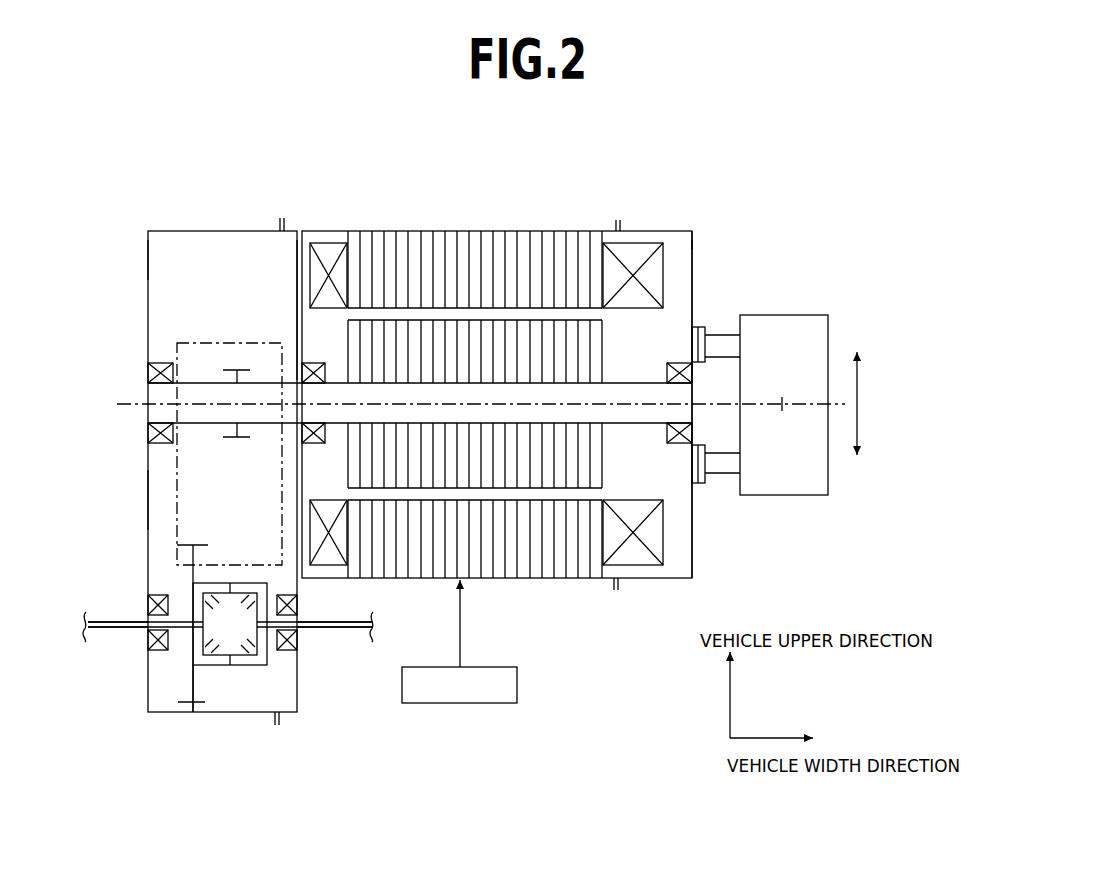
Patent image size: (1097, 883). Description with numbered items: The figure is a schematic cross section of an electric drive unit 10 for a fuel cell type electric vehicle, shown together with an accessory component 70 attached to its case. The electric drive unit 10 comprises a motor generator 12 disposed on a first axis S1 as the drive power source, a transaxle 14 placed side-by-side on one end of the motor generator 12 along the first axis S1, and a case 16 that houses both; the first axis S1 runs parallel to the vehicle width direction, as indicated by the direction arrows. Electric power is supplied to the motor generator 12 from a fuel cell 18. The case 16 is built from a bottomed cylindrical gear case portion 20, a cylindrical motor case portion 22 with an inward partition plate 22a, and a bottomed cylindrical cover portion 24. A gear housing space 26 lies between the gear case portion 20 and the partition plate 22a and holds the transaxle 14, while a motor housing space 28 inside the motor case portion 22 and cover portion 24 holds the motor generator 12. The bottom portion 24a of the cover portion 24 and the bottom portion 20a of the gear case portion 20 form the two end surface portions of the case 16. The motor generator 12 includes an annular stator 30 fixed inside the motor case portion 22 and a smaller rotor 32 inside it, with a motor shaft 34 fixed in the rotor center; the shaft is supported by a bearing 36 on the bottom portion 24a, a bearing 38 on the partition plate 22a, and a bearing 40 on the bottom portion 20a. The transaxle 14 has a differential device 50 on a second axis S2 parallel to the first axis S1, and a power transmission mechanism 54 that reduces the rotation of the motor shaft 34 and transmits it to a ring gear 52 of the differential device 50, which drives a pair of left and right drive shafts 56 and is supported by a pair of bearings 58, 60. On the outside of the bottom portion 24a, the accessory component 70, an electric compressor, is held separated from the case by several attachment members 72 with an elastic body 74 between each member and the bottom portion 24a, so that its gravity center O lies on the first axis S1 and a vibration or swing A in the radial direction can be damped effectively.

The electric drive unit 10 is at (716, 172).
The motor generator 12 is at (414, 214).
The transaxle 14 is at (183, 315).
The case 16 is at (584, 178).
The fuel cell 18 is at (462, 705).
The gear case portion 20 is at (215, 229).
The bottom portion of the gear case portion 20a is at (148, 258).
The motor case portion 22 is at (510, 580).
The partition plate 22a is at (297, 297).
The cover portion 24 is at (655, 583).
The bottom portion of the cover portion 24a is at (693, 250).
The gear housing space 26 is at (210, 275).
The motor housing space 28 is at (656, 347).
The stator 30 is at (512, 232).
The rotor 32 is at (416, 468).
The motor shaft 34 is at (335, 381).
The bearing 36 is at (693, 383).
The bearing 38 is at (315, 445).
The bearing 40 is at (163, 365).
The differential device 50 is at (231, 675).
The ring gear 52 is at (193, 712).
The power transmission mechanism 54 is at (148, 499).
The drive shafts 56 is at (101, 629).
The bearing 58 is at (300, 639).
The bearing 60 is at (157, 597).
The accessory component 70 is at (812, 468).
The attachment members 72 is at (727, 338).
The elastic body 74 is at (702, 327).
The first axis S1 is at (462, 527).
The second axis S2 is at (209, 627).
The gravity center O is at (772, 393).
The vibration or swing A is at (869, 403).